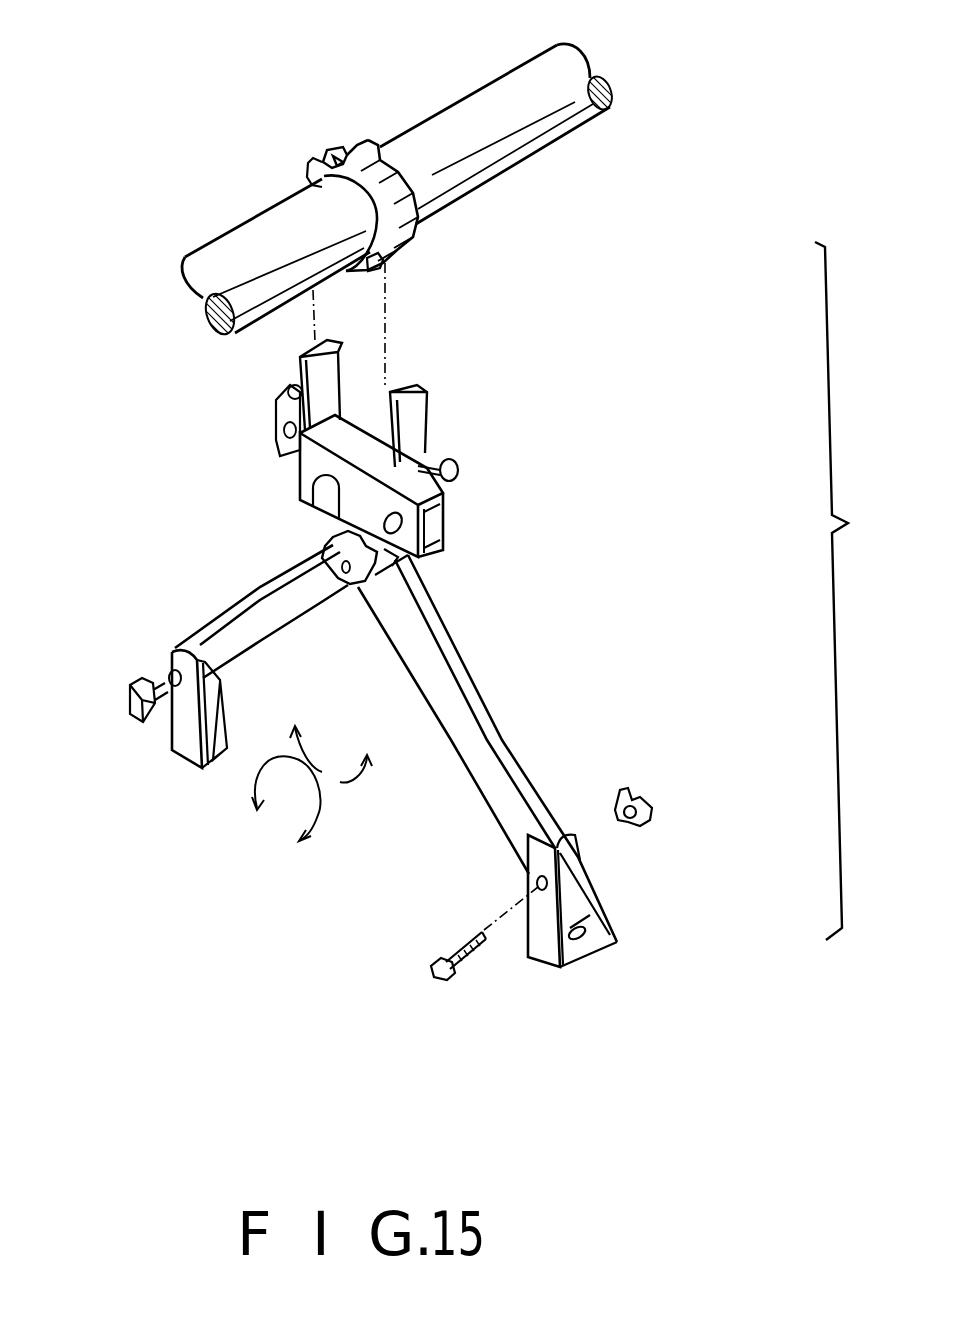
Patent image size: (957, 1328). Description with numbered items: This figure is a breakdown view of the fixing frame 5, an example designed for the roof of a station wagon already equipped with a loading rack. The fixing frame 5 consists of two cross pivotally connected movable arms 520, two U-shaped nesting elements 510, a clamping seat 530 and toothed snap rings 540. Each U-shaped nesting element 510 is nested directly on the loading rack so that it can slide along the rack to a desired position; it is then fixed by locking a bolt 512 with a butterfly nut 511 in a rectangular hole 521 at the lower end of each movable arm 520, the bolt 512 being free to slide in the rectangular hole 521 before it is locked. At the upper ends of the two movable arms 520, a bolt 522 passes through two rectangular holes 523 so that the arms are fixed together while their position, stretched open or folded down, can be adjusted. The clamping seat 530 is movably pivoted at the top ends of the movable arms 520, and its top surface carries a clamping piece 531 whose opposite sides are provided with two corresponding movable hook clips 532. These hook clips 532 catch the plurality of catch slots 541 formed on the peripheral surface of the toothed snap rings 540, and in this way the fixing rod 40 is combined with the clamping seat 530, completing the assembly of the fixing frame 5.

The fixing rod 40 is at (480, 107).
The toothed snap ring 540 is at (332, 147).
The catch slot 541 is at (400, 218).
The movable hook clip 532 is at (323, 380).
The clamping piece 531 is at (433, 452).
The clamping seat 530 is at (320, 467).
The bolt 522 is at (333, 550).
The rectangular hole 523 is at (392, 553).
The movable arm 520 is at (272, 625).
The rectangular hole 521 is at (153, 692).
The U-shaped nesting element 510 is at (188, 742).
The butterfly nut 511 is at (630, 805).
The bolt 512 is at (432, 980).
The fixing frame 5 is at (850, 591).